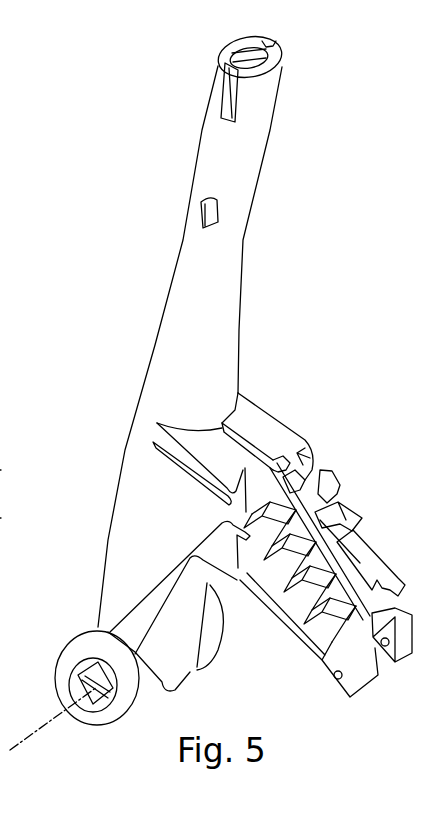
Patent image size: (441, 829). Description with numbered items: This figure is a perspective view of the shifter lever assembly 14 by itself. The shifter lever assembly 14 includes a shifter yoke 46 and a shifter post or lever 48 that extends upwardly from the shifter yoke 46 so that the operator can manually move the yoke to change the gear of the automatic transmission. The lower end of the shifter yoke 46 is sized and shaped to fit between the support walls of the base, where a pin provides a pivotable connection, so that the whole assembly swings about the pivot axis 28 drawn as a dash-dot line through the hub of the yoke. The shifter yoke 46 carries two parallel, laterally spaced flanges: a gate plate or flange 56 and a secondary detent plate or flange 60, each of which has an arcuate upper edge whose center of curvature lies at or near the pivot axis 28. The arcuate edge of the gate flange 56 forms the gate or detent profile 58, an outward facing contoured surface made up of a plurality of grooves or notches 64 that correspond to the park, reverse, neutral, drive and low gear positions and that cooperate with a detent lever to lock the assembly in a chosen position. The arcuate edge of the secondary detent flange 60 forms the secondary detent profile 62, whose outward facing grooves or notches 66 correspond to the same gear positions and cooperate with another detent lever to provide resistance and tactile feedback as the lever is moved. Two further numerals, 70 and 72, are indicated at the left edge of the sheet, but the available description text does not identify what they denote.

The shifter lever assembly 14 is at (96, 201).
The pivot axis 28 is at (40, 720).
The shifter yoke 46 is at (78, 633).
The shifter post or lever 48 is at (259, 180).
The gate plate or flange 56 is at (305, 448).
The gate or detent profile 58 is at (367, 561).
The secondary detent plate or flange 60 is at (257, 443).
The secondary detent profile 62 is at (303, 596).
The grooves or notches 64 is at (348, 518).
The grooves or notches 66 is at (330, 620).
The spring 70 is at (6, 468).
The spring end 72 is at (0, 518).